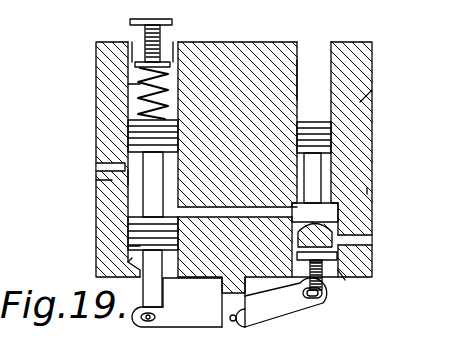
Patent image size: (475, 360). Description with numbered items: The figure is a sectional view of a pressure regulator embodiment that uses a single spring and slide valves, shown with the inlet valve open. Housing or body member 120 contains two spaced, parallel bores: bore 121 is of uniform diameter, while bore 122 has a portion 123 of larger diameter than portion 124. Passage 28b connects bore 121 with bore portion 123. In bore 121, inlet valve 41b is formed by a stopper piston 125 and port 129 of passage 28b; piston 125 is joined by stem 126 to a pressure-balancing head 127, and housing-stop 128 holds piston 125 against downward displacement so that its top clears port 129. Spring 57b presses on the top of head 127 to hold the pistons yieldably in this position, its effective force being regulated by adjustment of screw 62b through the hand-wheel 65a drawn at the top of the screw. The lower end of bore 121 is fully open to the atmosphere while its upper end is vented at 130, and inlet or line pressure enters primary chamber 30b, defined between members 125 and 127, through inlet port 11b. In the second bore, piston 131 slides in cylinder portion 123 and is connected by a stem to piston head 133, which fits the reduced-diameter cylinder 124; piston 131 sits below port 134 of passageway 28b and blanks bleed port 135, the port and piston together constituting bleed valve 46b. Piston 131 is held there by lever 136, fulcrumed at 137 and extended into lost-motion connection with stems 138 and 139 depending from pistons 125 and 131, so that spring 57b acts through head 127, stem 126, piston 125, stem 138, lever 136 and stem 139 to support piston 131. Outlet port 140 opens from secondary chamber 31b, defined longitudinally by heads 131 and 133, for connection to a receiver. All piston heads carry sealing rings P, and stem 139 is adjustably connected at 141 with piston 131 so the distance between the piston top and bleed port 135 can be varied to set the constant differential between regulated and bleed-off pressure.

The housing or body member 120 is at (252, 62).
The primary chamber 30b is at (130, 165).
The secondary chamber 31b is at (333, 170).
The inlet port 11b is at (100, 170).
The bore 121 is at (100, 181).
The bleed port 135 is at (365, 240).
The piston head 133 is at (368, 96).
The bore portion of larger diameter 123 is at (368, 191).
The vent 130 is at (172, 44).
The screw 62b is at (144, 32).
The screw head 65a is at (165, 21).
The spring 57b is at (146, 86).
The pressure-balancing head 127 is at (136, 136).
The stem 126 is at (131, 190).
The port 129 is at (152, 192).
The inlet valve 41b is at (130, 234).
The piston 125 is at (60, 244).
The housing-stop 128 is at (132, 258).
The stem 138 is at (157, 288).
The passage 28b is at (225, 212).
The port 134 is at (268, 306).
The lever 136 is at (283, 320).
The bore 122 is at (318, 133).
The bore portion or cylinder 124 is at (300, 80).
The fulcrum 137 is at (373, 157).
The outlet port 140 is at (373, 177).
The piston 131 is at (355, 228).
The bleed valve 46b is at (352, 254).
The adjustable connection 141 is at (370, 281).
The stem 139 is at (318, 262).
The sealing rings P is at (128, 84).